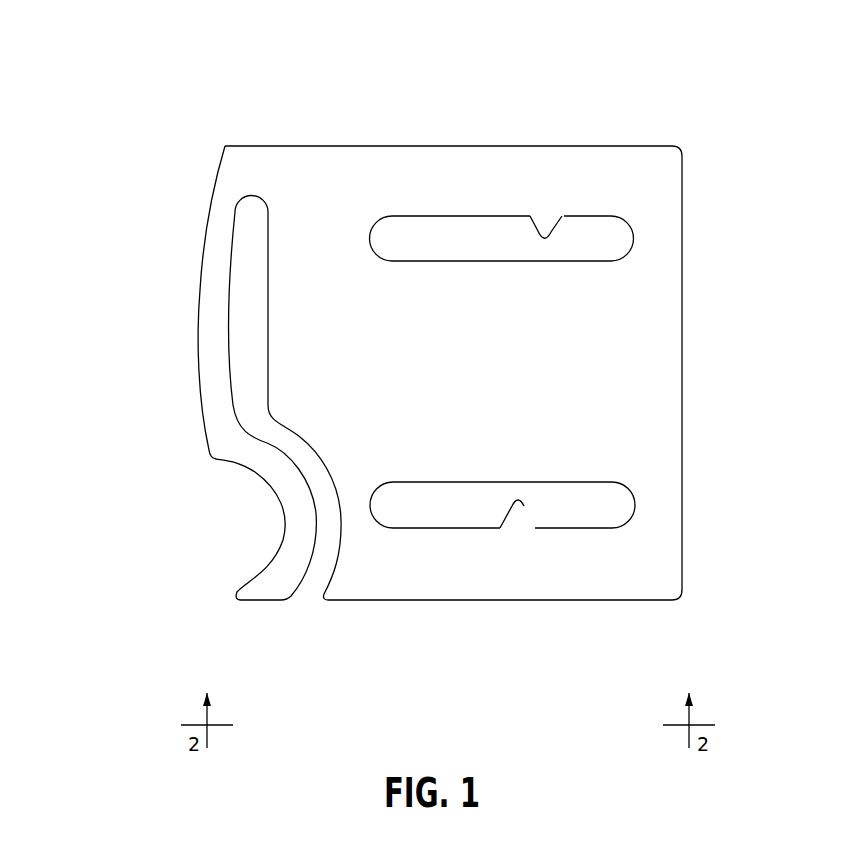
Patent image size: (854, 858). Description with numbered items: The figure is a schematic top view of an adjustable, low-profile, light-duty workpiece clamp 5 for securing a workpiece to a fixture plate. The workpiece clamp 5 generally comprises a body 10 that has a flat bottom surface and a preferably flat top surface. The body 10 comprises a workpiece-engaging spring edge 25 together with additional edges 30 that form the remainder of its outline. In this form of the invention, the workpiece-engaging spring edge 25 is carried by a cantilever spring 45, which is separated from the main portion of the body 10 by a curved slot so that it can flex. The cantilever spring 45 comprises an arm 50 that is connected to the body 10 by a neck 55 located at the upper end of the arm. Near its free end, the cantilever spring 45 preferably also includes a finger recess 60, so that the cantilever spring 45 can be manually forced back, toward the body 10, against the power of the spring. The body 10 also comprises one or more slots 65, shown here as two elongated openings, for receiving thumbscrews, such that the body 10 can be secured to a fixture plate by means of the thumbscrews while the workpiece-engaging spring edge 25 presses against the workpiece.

The workpiece clamp 5 is at (137, 83).
The body 10 is at (571, 343).
The workpiece-engaging spring edge 25 is at (188, 329).
The additional edges 30 is at (462, 143).
The cantilever spring 45 is at (216, 261).
The arm 50 is at (216, 395).
The neck 55 is at (255, 165).
The finger recess 60 is at (252, 563).
The slots 65 is at (562, 216).